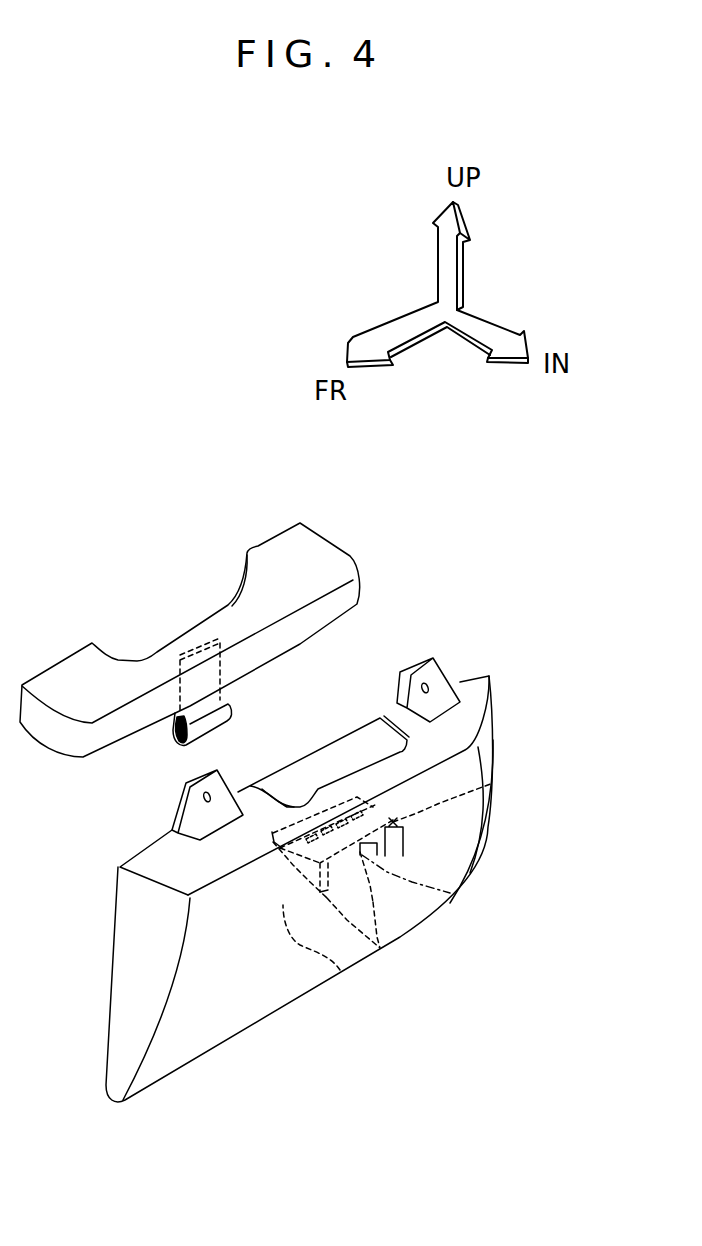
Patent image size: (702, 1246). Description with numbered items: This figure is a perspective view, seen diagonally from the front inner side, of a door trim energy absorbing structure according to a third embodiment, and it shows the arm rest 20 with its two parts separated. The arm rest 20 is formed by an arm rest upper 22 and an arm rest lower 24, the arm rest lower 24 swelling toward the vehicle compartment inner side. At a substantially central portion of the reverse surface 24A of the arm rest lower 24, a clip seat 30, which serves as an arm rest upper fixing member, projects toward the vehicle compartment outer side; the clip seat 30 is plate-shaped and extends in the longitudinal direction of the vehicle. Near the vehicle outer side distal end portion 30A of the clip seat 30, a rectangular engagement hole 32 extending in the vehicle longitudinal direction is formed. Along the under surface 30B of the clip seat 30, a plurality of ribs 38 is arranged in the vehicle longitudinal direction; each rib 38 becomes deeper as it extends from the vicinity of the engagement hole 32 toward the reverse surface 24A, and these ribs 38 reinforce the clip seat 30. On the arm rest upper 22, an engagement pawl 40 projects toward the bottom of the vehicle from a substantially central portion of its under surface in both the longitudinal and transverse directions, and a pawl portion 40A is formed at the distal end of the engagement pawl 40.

The arm rest 20 is at (558, 484).
The arm rest upper 22 is at (347, 552).
The arm rest lower 24 is at (499, 647).
The reverse surface 24A is at (340, 970).
The clip seat 30 is at (490, 788).
The distal end portion 30A is at (308, 815).
The under surface 30B is at (458, 898).
The engagement hole 32 is at (343, 797).
The ribs 38 is at (403, 843).
The engagement pawl 40 is at (232, 699).
The pawl portion 40A is at (172, 740).